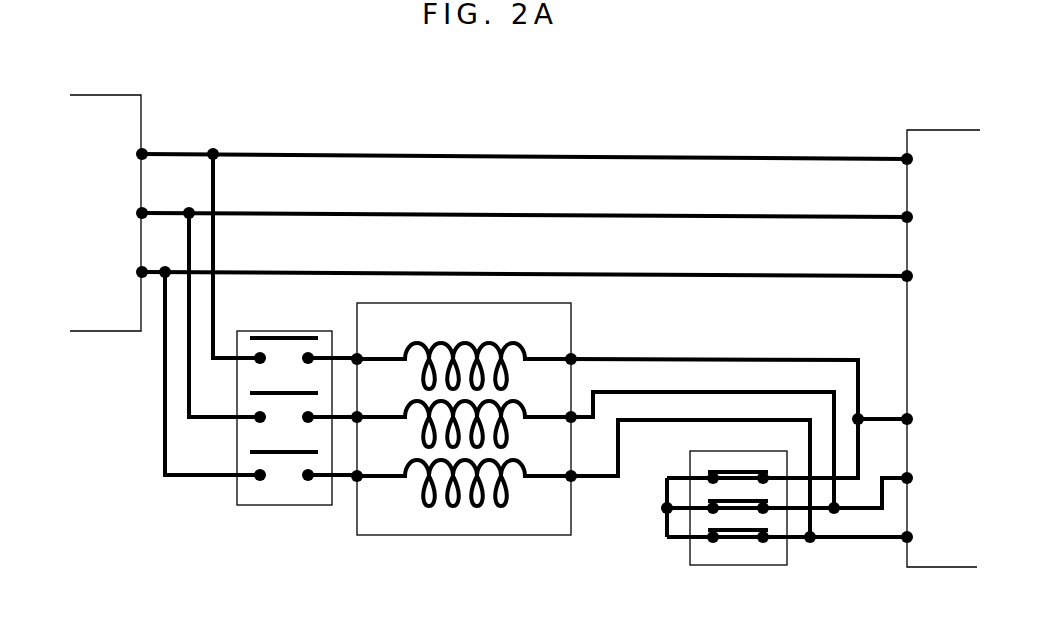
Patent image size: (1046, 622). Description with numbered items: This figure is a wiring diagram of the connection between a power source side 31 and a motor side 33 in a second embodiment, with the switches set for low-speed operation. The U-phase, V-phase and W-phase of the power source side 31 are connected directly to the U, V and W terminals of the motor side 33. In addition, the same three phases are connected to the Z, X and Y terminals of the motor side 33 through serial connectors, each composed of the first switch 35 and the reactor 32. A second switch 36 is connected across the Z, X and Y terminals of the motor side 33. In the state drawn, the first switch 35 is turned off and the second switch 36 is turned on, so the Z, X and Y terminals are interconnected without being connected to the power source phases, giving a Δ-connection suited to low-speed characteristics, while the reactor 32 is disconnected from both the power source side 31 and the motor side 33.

The power source side 31 is at (98, 333).
The reactor 32 is at (571, 312).
The motor side 33 is at (904, 132).
The first switch 35 is at (237, 504).
The second switch 36 is at (690, 561).